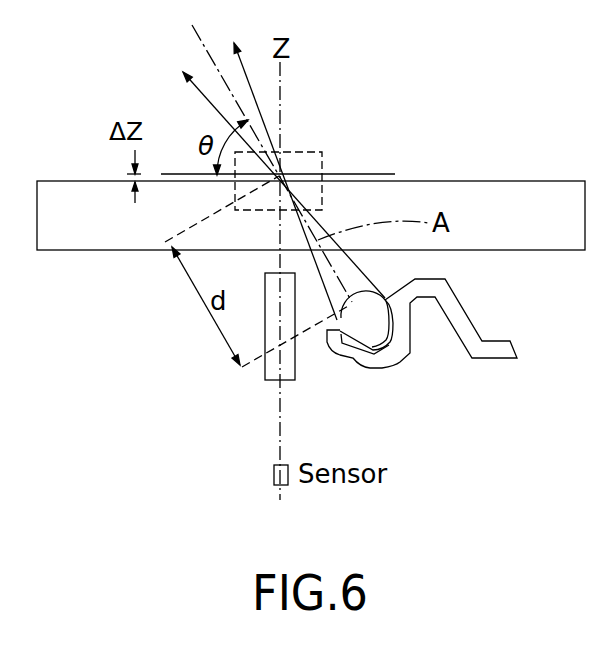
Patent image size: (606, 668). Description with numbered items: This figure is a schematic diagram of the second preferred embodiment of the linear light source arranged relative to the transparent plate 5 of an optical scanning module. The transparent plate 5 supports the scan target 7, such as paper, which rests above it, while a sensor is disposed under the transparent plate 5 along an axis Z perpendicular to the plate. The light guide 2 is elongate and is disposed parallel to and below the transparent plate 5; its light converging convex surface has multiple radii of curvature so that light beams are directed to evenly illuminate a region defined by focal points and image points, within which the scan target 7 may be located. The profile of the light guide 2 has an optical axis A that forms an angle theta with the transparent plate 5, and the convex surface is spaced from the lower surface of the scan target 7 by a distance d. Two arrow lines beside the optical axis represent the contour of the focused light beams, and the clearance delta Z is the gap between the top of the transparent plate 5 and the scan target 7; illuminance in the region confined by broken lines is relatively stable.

The light guide 2 is at (380, 333).
The transparent plate 5 is at (87, 228).
The scan target 7 is at (340, 173).